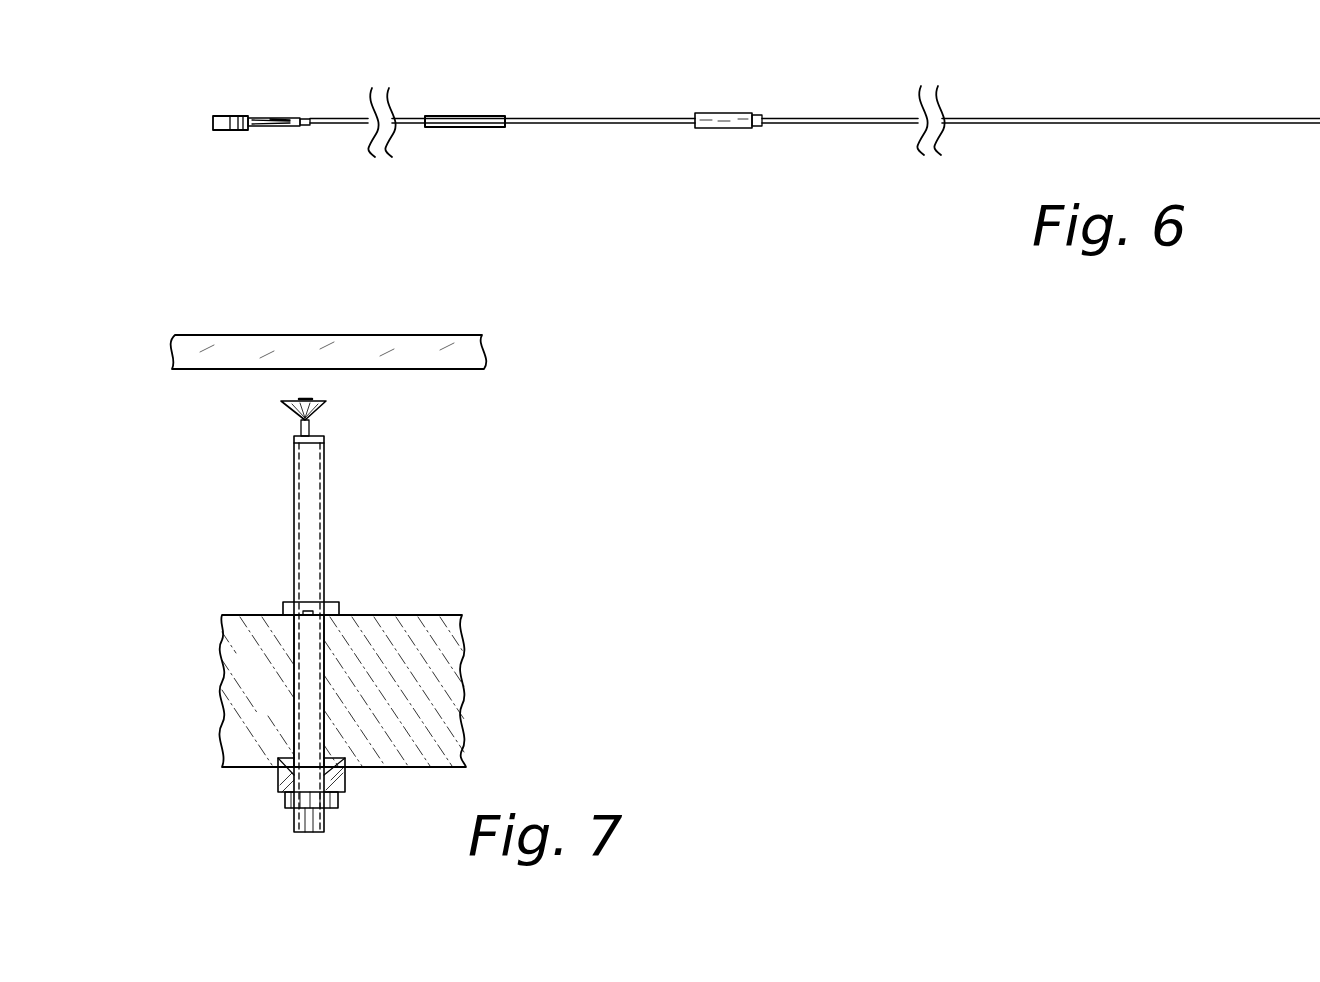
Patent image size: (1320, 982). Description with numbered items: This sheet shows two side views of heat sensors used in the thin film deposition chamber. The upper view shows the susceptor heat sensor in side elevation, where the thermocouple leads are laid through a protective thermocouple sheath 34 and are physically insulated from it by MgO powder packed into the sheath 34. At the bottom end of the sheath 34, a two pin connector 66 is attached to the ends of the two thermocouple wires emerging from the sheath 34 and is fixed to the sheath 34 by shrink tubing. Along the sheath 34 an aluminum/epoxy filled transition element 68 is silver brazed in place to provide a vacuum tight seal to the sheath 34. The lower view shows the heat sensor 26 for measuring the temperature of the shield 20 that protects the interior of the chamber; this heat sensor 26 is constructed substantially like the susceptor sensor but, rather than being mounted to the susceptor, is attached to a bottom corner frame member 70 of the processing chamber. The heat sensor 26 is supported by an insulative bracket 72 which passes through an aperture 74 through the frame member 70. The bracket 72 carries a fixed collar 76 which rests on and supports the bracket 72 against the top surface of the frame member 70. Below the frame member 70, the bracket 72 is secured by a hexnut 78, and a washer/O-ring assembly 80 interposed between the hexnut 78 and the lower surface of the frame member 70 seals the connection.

In FIG. 7, the shield 20 is at (412, 338).
In FIG. 7, the heat sensor 26 is at (420, 482).
In FIG. 6, the thermocouple sheath 34 is at (1098, 102).
In FIG. 6, the two pin connector 66 is at (238, 104).
In FIG. 6, the transition element 68 is at (705, 112).
In FIG. 7, the bottom corner frame member 70 is at (413, 633).
In FIG. 7, the insulative bracket 72 is at (290, 492).
In FIG. 7, the aperture 74 is at (320, 663).
In FIG. 7, the fixed collar 76 is at (283, 604).
In FIG. 7, the hexnut 78 is at (286, 810).
In FIG. 7, the washer/O-ring assembly 80 is at (274, 791).